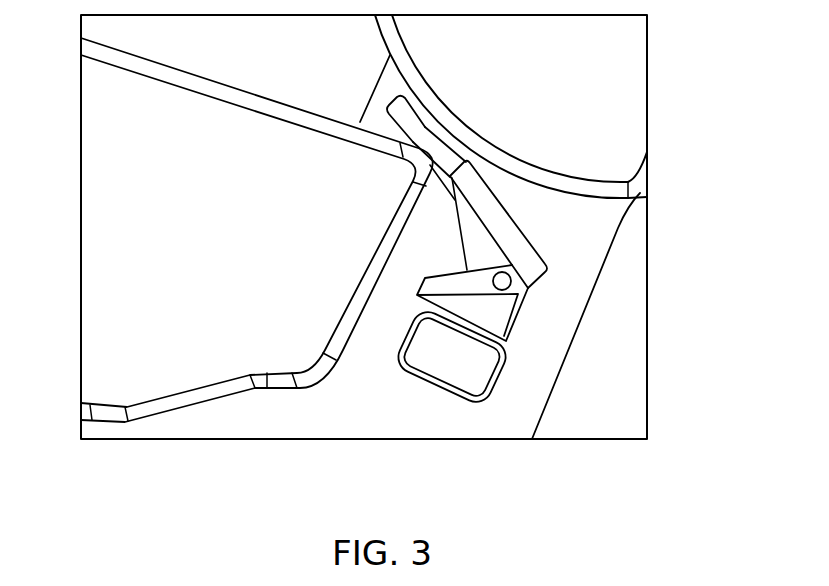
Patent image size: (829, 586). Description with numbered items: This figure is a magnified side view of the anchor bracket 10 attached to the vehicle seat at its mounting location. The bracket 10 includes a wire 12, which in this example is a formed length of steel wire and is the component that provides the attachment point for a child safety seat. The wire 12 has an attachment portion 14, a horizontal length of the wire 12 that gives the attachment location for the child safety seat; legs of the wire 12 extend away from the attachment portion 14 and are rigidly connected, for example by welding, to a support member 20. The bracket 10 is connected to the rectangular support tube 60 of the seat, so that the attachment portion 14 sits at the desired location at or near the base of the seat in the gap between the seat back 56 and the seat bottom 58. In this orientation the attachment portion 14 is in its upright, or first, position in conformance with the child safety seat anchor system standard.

The anchor bracket 10 is at (548, 308).
The wire 12 is at (435, 158).
The attachment portion 14 is at (390, 100).
The support member 20 is at (523, 238).
The seat back 56 is at (628, 53).
The seat bottom 58 is at (190, 117).
The rectangular support tube 60 is at (507, 367).